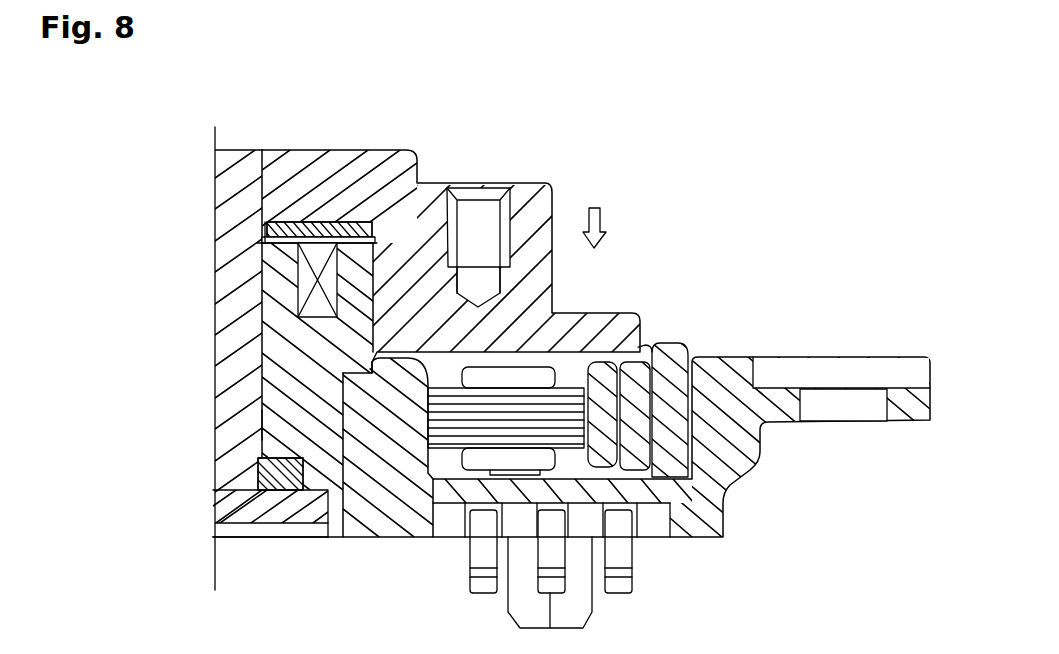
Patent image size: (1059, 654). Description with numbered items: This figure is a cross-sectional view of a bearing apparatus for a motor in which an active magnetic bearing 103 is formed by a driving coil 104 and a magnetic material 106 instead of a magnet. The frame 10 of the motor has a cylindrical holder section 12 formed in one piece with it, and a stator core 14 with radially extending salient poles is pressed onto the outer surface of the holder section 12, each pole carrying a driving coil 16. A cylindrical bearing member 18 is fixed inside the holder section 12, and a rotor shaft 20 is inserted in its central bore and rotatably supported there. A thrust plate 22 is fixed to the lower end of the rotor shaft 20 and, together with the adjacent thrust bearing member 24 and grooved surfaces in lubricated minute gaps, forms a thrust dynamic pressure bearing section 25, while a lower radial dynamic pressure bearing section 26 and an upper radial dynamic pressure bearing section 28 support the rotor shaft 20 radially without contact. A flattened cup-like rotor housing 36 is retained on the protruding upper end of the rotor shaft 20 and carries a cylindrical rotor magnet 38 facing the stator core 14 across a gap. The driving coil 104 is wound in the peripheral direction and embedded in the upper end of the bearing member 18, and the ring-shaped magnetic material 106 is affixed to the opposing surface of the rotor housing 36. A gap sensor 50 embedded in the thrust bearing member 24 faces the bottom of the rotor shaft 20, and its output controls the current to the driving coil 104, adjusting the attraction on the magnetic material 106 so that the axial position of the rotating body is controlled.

The frame 10 is at (713, 520).
The holder section 12 is at (396, 425).
The stator core 14 is at (553, 407).
The driving coil 16 is at (512, 377).
The bearing member 18 is at (277, 368).
The rotor shaft 20 is at (232, 335).
The thrust plate 22 is at (275, 458).
The thrust bearing member 24 is at (317, 537).
The thrust dynamic pressure bearing section 25 is at (245, 482).
The radial dynamic pressure bearing section 26 is at (255, 422).
The radial dynamic pressure bearing section 28 is at (256, 290).
The rotor housing 36 is at (533, 200).
The rotor magnet 38 is at (612, 385).
The gap sensor 50 is at (236, 540).
The active magnetic bearing 103 is at (294, 200).
The driving coil 104 is at (335, 250).
The magnetic material 106 is at (328, 272).